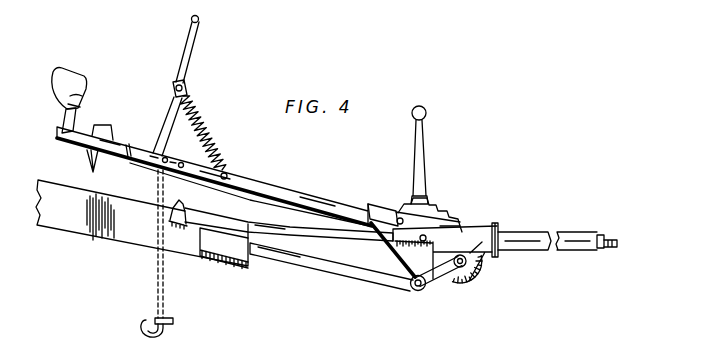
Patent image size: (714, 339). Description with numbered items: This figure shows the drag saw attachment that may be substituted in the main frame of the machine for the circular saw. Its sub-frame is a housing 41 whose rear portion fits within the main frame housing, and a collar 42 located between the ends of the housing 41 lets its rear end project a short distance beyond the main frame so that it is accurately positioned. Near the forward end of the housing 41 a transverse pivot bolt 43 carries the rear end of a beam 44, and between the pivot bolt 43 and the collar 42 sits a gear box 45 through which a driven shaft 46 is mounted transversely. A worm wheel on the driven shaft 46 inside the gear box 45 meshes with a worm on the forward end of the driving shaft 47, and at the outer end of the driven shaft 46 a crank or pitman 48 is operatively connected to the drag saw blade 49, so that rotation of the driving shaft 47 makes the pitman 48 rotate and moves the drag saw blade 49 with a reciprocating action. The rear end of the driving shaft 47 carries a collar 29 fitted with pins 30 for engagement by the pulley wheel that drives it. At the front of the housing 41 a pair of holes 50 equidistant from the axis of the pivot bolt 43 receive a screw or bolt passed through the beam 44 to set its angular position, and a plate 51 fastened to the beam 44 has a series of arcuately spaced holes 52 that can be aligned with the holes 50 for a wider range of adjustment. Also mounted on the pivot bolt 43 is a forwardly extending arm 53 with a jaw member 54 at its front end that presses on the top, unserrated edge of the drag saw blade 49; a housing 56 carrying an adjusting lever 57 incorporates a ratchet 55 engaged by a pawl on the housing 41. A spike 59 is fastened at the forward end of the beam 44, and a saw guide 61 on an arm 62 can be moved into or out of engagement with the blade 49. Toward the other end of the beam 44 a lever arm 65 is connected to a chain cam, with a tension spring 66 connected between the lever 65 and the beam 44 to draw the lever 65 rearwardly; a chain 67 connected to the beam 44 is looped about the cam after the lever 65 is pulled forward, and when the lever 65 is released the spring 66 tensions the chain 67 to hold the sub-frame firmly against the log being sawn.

The collar 29 is at (600, 251).
The pins 30 is at (607, 249).
The housing 41 is at (514, 233).
The collar 42 is at (498, 256).
The transverse pivot bolt 43 is at (428, 238).
The beam 44 is at (280, 192).
The gear box 45 is at (457, 282).
The driven shaft 46 is at (468, 268).
The driving shaft 47 is at (600, 236).
The crank or pitman 48 is at (432, 292).
The drag saw blade 49 is at (97, 228).
The holes 50 is at (390, 245).
The plate 51 is at (388, 275).
The arcuately spaced holes 52 is at (399, 217).
The forwardly extending arm 53 is at (337, 229).
The jaw member 54 is at (175, 205).
The ratchet 55 is at (443, 225).
The housing 56 is at (430, 207).
The adjusting lever 57 is at (424, 133).
The spike 59 is at (88, 156).
The saw guide 61 is at (68, 97).
The arm 62 is at (65, 113).
The lever arm 65 is at (187, 58).
The tension spring 66 is at (202, 122).
The chain 67 is at (157, 299).